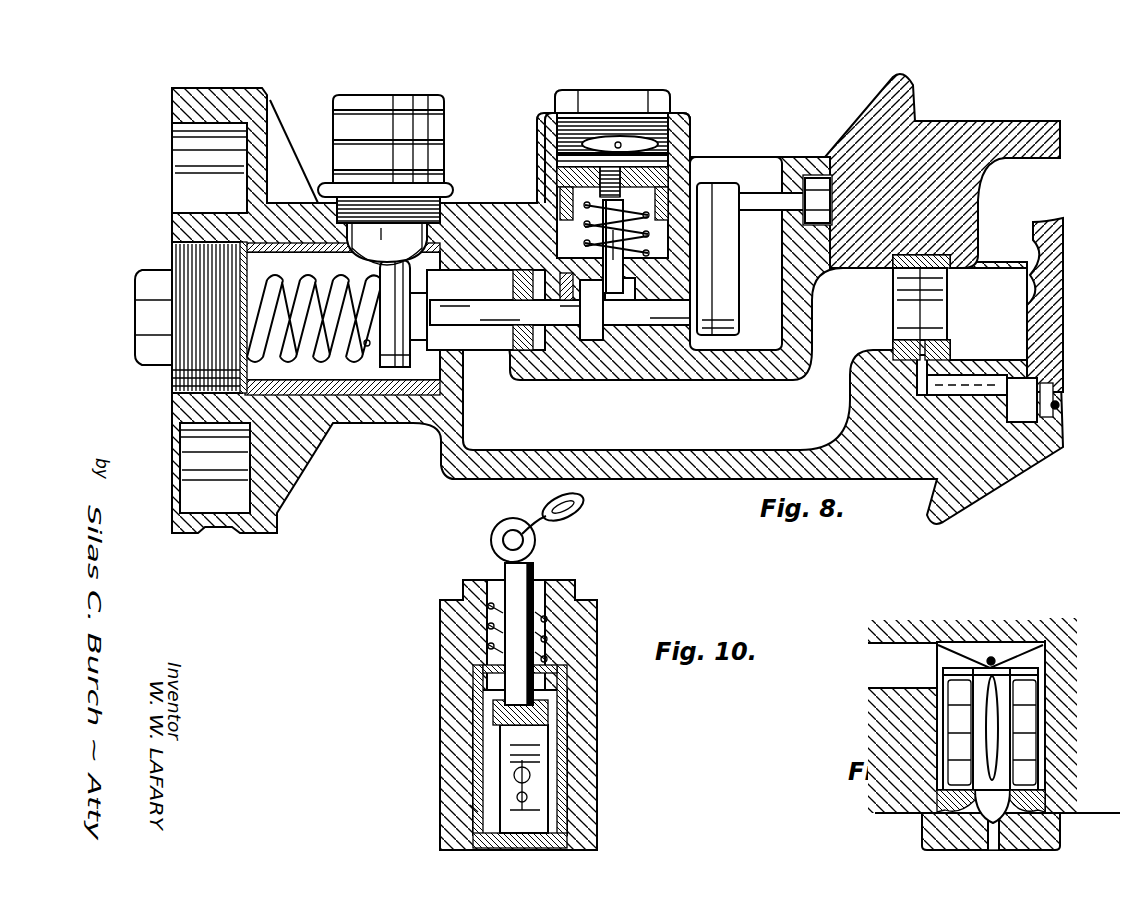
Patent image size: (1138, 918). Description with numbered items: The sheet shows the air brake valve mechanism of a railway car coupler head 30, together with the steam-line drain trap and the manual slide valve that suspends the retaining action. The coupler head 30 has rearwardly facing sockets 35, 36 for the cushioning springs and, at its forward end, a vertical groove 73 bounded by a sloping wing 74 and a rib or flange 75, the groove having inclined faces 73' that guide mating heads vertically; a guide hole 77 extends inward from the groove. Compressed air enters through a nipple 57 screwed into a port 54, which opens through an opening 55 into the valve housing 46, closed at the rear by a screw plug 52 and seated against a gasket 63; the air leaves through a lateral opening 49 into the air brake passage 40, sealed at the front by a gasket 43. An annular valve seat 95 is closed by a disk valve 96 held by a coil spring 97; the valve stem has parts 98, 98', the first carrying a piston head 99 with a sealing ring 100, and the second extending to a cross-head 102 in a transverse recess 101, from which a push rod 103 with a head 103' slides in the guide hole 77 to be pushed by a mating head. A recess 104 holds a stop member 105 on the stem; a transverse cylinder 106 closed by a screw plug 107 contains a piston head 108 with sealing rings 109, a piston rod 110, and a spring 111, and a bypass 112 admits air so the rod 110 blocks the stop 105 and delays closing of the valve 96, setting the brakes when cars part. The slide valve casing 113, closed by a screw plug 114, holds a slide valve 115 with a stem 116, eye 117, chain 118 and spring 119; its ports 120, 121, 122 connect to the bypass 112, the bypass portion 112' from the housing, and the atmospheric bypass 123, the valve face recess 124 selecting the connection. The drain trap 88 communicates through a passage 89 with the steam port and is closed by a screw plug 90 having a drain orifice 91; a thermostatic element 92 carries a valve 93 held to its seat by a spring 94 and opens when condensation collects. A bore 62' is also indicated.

In FIG. 8, the coupler head 30 is at (1008, 121).
In FIG. 9, the coupler head 30 is at (905, 702).
In FIG. 10, the coupler head 30 is at (455, 605).
In FIG. 8, the rearwardly facing socket 35 is at (190, 170).
In FIG. 8, the rearwardly facing socket 36 is at (195, 470).
In FIG. 8, the air brake passage 40 is at (702, 482).
In FIG. 8, the compressible gasket 43 is at (897, 348).
In FIG. 8, the valve housing 46 is at (342, 319).
In FIG. 8, the lateral opening 49 is at (505, 382).
In FIG. 8, the screw plug 52 is at (140, 320).
In FIG. 8, the port 54 is at (387, 242).
In FIG. 8, the opening 55 is at (362, 258).
In FIG. 8, the nipple 57 is at (418, 126).
In FIG. 8, the bore 62' is at (469, 212).
In FIG. 8, the gasket 63 is at (588, 345).
In FIG. 8, the vertical groove 73 is at (933, 305).
In FIG. 8, the inclined faces 73' is at (946, 360).
In FIG. 8, the sloping wing 74 is at (865, 110).
In FIG. 8, the rib or flange 75 is at (920, 126).
In FIG. 8, the guide hole 77 is at (833, 157).
In FIG. 9, the trap 88 is at (1040, 661).
In FIG. 9, the passage 89 is at (888, 660).
In FIG. 9, the screw plug 90 is at (930, 831).
In FIG. 9, the drain orifice 91 is at (1000, 835).
In FIG. 9, the thermostatic element 92 is at (1030, 716).
In FIG. 9, the valve 93 is at (1012, 801).
In FIG. 9, the spring 94 is at (965, 650).
In FIG. 8, the annular valve seat 95 is at (432, 288).
In FIG. 8, the disk valve 96 is at (402, 319).
In FIG. 8, the expansive coil spring 97 is at (313, 328).
In FIG. 8, the valve stem member 98 is at (436, 316).
In FIG. 8, the valve stem member 98' is at (680, 360).
In FIG. 8, the piston head 99 is at (515, 292).
In FIG. 8, the sealing ring 100 is at (512, 343).
In FIG. 8, the transverse recess 101 is at (760, 163).
In FIG. 8, the cross-head 102 is at (722, 283).
In FIG. 8, the push rod 103 is at (916, 307).
In FIG. 8, the head 103' is at (902, 325).
In FIG. 8, the recess 104 is at (635, 350).
In FIG. 8, the stop member 105 is at (605, 342).
In FIG. 8, the transverse cylinder 106 is at (660, 150).
In FIG. 8, the screw plug 107 is at (652, 104).
In FIG. 8, the piston head 108 is at (557, 162).
In FIG. 8, the sealing rings 109 is at (557, 198).
In FIG. 8, the piston rod 110 is at (660, 188).
In FIG. 8, the expansive coil spring 111 is at (568, 275).
In FIG. 8, the bypass 112 is at (637, 147).
In FIG. 8, the bypass portion 112' is at (343, 359).
In FIG. 10, the bypass portion 112' is at (439, 824).
In FIG. 10, the valve casing 113 is at (480, 690).
In FIG. 10, the screw plug 114 is at (565, 590).
In FIG. 10, the slide valve 115 is at (548, 720).
In FIG. 10, the stem 116 is at (530, 582).
In FIG. 10, the eye 117 is at (491, 541).
In FIG. 10, the chain 118 is at (586, 511).
In FIG. 10, the expansive coil spring 119 is at (487, 641).
In FIG. 10, the central port 120 is at (530, 776).
In FIG. 10, the innermost port 121 is at (528, 798).
In FIG. 10, the outermost port 122 is at (478, 749).
In FIG. 10, the bypass 123 is at (560, 756).
In FIG. 10, the connecting port 124 is at (514, 776).